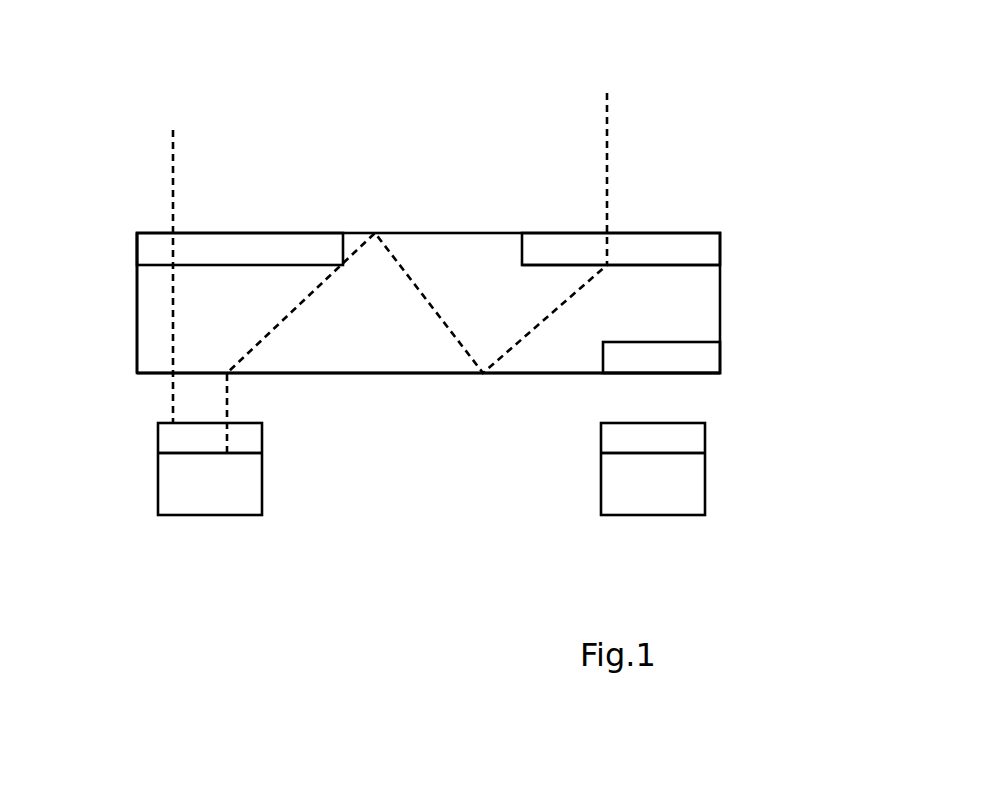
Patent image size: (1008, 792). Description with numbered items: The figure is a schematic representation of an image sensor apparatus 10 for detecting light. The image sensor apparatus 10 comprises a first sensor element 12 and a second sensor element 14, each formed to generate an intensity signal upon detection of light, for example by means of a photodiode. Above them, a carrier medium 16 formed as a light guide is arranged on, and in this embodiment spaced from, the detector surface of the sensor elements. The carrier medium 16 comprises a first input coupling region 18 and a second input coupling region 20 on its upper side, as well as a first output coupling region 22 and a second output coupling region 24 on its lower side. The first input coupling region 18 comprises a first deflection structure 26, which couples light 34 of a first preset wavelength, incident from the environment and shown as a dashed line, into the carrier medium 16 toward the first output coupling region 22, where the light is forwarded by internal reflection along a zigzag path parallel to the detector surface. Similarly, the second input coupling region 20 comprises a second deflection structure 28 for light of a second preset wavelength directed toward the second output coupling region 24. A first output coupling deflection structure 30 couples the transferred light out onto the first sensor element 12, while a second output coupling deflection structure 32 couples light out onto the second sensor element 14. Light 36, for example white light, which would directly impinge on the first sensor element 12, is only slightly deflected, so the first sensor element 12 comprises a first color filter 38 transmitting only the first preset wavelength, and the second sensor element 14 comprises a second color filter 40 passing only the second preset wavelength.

The image sensor apparatus 10 is at (802, 134).
The first sensor element 12 is at (165, 520).
The second sensor element 14 is at (710, 490).
The carrier medium 16 is at (726, 300).
The first input coupling region 18 is at (625, 229).
The second input coupling region 20 is at (260, 230).
The first output coupling region 22 is at (160, 383).
The second output coupling region 24 is at (692, 385).
The first deflection structure 26 is at (694, 252).
The second deflection structure 28 is at (322, 258).
The first output coupling deflection structure 30 is at (136, 357).
The second output coupling deflection structure 32 is at (694, 359).
The light 34 is at (606, 110).
The light 36 is at (172, 141).
The first color filter 38 is at (264, 437).
The second color filter 40 is at (598, 437).